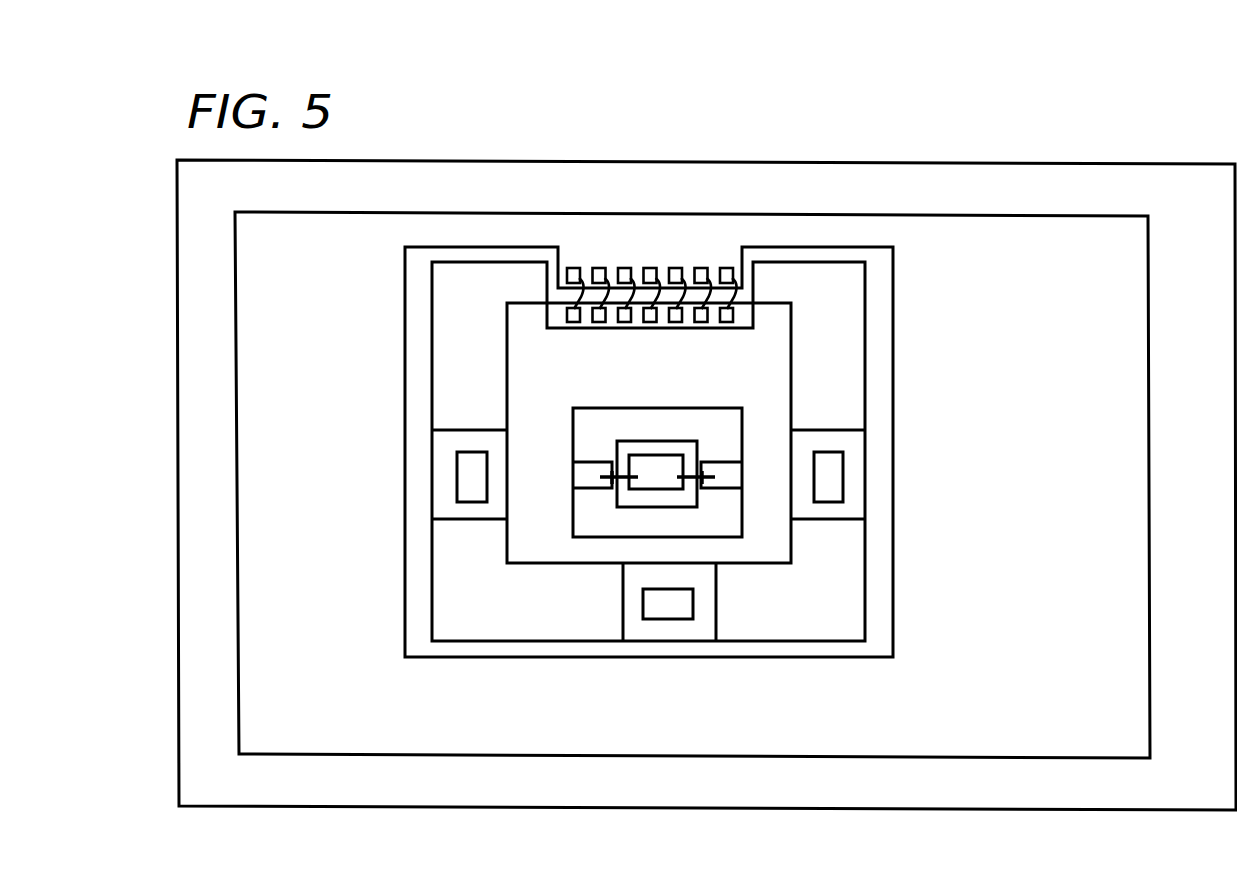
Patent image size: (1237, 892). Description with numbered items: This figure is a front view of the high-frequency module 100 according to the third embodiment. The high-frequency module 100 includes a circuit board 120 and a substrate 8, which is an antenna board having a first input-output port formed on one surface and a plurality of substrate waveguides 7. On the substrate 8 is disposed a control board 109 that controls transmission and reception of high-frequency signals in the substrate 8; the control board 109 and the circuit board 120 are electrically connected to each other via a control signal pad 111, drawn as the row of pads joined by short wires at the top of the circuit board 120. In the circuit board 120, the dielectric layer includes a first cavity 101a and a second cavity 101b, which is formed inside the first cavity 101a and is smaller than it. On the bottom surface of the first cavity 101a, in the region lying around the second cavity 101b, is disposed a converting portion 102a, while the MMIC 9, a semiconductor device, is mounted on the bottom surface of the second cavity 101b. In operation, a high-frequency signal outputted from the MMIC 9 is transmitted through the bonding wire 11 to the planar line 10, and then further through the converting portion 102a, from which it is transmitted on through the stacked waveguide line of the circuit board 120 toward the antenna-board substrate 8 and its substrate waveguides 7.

The high-frequency module 100 is at (1130, 116).
The substrate 8 is at (931, 180).
The control board 109 is at (980, 240).
The substrate waveguides 7 is at (826, 460).
The control signal pad 111 is at (638, 257).
The circuit board 120 is at (795, 345).
The first cavity 101a is at (602, 517).
The second cavity 101b is at (683, 502).
The MMIC 9 is at (645, 463).
The converting portion 102a is at (588, 473).
The planar line 10 is at (598, 480).
The bonding wire 11 is at (688, 473).